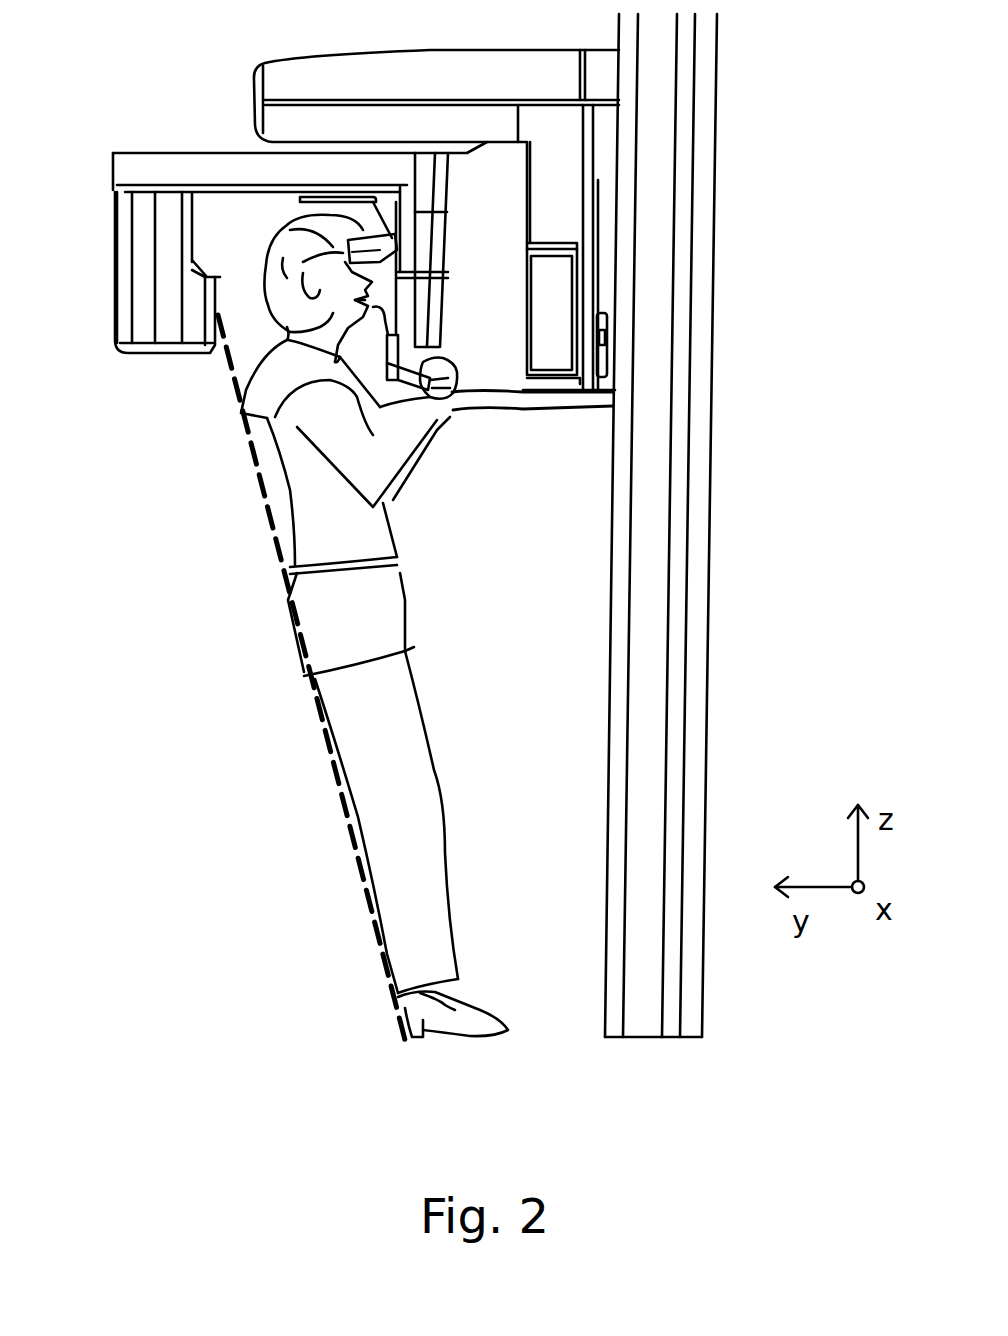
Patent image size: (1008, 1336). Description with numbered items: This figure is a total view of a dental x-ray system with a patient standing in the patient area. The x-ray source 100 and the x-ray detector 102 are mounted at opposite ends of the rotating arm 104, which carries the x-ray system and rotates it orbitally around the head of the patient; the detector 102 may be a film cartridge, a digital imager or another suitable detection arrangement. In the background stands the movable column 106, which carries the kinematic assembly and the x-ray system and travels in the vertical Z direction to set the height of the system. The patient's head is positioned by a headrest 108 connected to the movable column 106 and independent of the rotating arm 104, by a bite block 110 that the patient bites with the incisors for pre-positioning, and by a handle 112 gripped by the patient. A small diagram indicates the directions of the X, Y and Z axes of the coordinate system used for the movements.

The x-ray source 100 is at (150, 348).
The x-ray detector 102 is at (437, 305).
The rotating arm 104 is at (200, 152).
The movable column 106 is at (710, 427).
The headrest 108 is at (362, 262).
The bite block 110 is at (383, 322).
The handle 112 is at (463, 415).